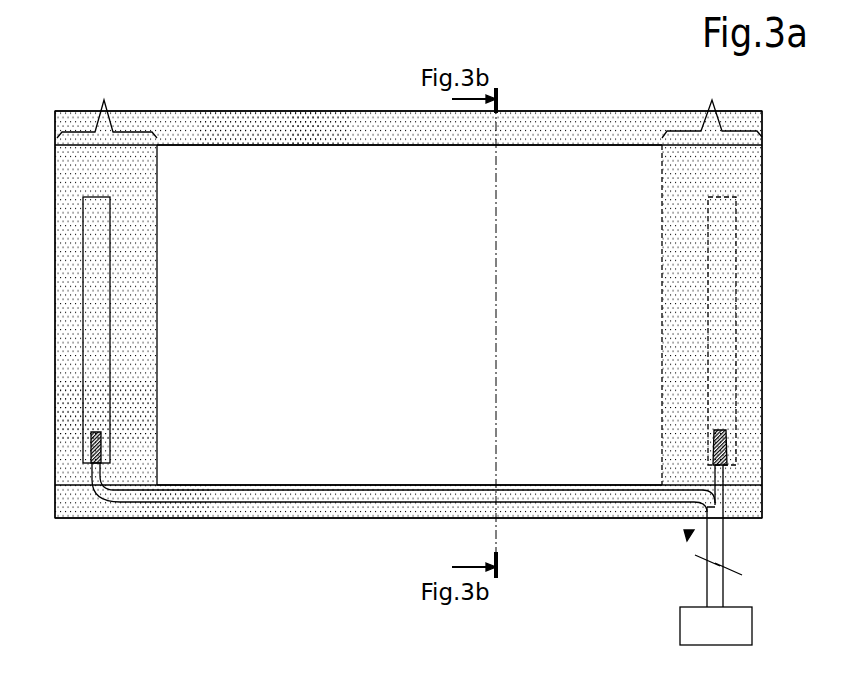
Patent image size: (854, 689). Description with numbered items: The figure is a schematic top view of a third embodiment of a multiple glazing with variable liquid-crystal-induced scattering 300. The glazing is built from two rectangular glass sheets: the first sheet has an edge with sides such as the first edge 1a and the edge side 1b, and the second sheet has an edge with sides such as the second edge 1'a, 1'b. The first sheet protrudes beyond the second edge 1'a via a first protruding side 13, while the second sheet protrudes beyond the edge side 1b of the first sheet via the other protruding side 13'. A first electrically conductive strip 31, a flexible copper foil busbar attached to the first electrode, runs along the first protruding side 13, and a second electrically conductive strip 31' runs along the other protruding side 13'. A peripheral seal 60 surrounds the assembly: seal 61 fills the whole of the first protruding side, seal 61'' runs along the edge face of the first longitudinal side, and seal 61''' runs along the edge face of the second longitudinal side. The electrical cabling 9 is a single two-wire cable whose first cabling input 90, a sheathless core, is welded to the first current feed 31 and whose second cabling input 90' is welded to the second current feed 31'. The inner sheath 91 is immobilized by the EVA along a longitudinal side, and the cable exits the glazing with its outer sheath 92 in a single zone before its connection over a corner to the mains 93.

The multiple glazing with variable liquid-crystal-induced scattering 300 is at (574, 88).
The first edge 1a is at (57, 163).
The edge side of the first glass sheet 1b is at (662, 190).
The second edge 1'a is at (193, 315).
The second edge 1'b is at (788, 314).
The first protruding side 13 is at (107, 106).
The other protruding side 13' is at (712, 105).
The seal 60 is at (247, 114).
The seal 61 is at (142, 404).
The seal 61'' is at (179, 534).
The seal 61''' is at (320, 160).
The first electrically conductive strip 31 is at (158, 330).
The second electrically conductive strip 31' is at (769, 331).
The first cabling input 90 is at (57, 482).
The second cabling input 90' is at (765, 421).
The inner sheath 91 is at (242, 497).
The outer sheath 92 is at (715, 540).
The mains 93 is at (687, 620).
The cable 9 is at (686, 535).